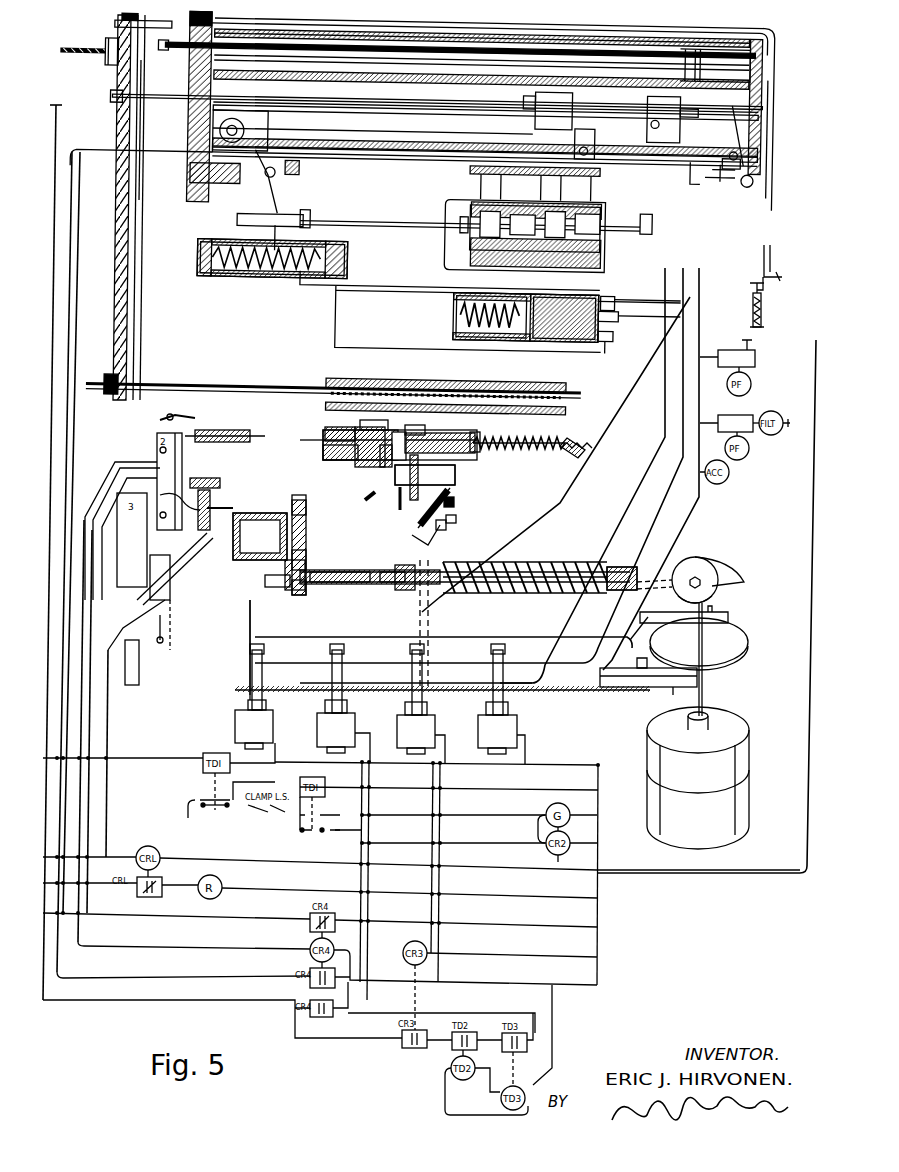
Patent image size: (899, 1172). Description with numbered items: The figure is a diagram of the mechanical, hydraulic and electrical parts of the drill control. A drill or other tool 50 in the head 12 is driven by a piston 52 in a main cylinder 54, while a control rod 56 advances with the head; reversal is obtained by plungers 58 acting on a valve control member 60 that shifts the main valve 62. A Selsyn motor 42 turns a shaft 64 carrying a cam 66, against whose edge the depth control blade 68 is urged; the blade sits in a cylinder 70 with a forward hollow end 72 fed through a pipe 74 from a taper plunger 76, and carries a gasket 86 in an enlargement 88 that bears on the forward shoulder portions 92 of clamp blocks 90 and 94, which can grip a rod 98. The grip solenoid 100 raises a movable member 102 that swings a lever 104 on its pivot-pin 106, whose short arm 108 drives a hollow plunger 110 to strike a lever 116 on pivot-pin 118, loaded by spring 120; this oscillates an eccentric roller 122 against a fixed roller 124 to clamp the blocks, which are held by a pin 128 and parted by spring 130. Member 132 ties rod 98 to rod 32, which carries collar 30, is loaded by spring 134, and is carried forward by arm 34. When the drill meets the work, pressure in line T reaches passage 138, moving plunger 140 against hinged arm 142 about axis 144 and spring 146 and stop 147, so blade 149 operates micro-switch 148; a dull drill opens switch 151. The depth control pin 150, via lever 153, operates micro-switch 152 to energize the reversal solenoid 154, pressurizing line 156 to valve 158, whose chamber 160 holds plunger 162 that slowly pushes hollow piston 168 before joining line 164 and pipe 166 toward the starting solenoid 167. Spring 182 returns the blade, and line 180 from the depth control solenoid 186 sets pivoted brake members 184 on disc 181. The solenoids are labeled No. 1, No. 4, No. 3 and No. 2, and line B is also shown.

The head 12 is at (109, 69).
The adjustable operating collar 30 is at (115, 378).
The rod 32 is at (217, 386).
The arm 34 is at (142, 330).
The Selsyn motor 42 is at (749, 800).
The drill or other tool 50 is at (86, 49).
The piston 52 is at (276, 58).
The main cylinder 54 is at (746, 51).
The control rod 56 is at (417, 106).
The plungers 58 is at (288, 277).
The valve control member 60 is at (304, 213).
The main valve 62 is at (474, 228).
The shaft 64 is at (703, 690).
The cam 66 is at (744, 578).
The depth control blade 68 is at (600, 567).
The cylinder 70 is at (506, 565).
The forward hollow end 72 is at (405, 565).
The pipe 74 is at (345, 588).
The taper plunger 76 is at (278, 590).
The gasket 86 is at (302, 555).
The enlargement 88 is at (300, 595).
The depth control clamp block 90 is at (340, 461).
The forward shoulder portions 92 is at (318, 442).
The depth control clamp block 94 is at (480, 437).
The rod 98 is at (525, 450).
The grip solenoid 100 is at (428, 714).
The movable member 102 is at (430, 620).
The lever 104 is at (436, 540).
The pivot-pin 106 is at (458, 520).
The short arm 108 is at (455, 505).
The hollow plunger 110 is at (446, 527).
The lever 116 is at (410, 480).
The pivot-pin 118 is at (398, 495).
The spring 120 is at (366, 498).
The eccentric roller 122 is at (425, 425).
The fixed roller 124 is at (374, 461).
The pin 128 is at (335, 428).
The spring 130 is at (374, 418).
The member 132 is at (577, 432).
The spring 134 is at (425, 378).
The passage 138 is at (306, 494).
The plunger 140 is at (260, 536).
The hinged arm 142 is at (198, 582).
The axis 144 is at (150, 658).
The spring 146 is at (215, 510).
The stop 147 is at (213, 478).
The micro-switch 148 is at (120, 495).
The blade 149 is at (150, 580).
The depth control pin 150 is at (225, 430).
The normally closed switch 151 is at (165, 632).
The micro-switch 152 is at (157, 445).
The lever 153 is at (165, 425).
The reversal solenoid 154 is at (347, 712).
The line 156 is at (752, 318).
The valve 158 is at (614, 297).
The chamber 160 is at (636, 303).
The plunger 162 is at (607, 331).
The line 164 is at (403, 283).
The pipe 166 is at (527, 340).
The starting solenoid 167 is at (510, 718).
The hollow piston 168 is at (565, 335).
The line 180 is at (252, 620).
The disc 181 is at (750, 645).
The spring 182 is at (392, 585).
The pivoted brake members 184 is at (660, 687).
The depth control solenoid 186 is at (248, 708).
The depth control solenoid 1 is at (235, 727).
The start solenoid 2 is at (518, 734).
The grip solenoid 3 is at (405, 734).
The reverse solenoid 4 is at (326, 733).
The pressure line B is at (240, 71).
The top of main cylinder line T is at (731, 148).